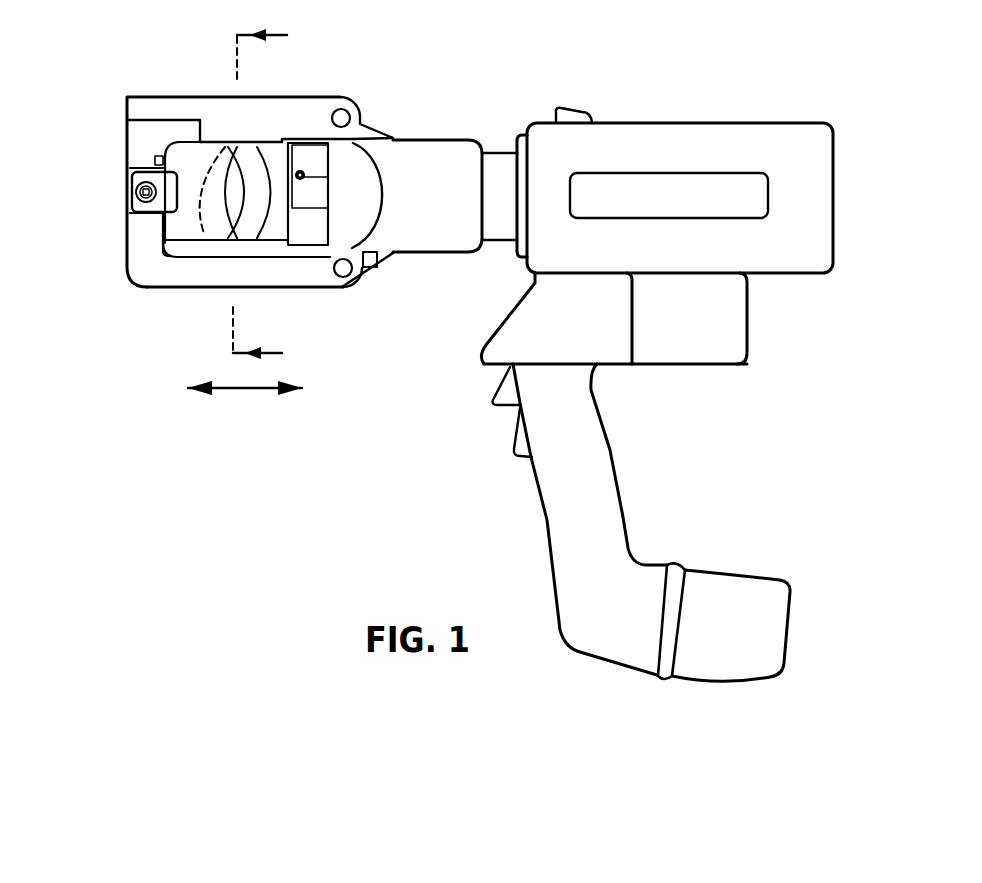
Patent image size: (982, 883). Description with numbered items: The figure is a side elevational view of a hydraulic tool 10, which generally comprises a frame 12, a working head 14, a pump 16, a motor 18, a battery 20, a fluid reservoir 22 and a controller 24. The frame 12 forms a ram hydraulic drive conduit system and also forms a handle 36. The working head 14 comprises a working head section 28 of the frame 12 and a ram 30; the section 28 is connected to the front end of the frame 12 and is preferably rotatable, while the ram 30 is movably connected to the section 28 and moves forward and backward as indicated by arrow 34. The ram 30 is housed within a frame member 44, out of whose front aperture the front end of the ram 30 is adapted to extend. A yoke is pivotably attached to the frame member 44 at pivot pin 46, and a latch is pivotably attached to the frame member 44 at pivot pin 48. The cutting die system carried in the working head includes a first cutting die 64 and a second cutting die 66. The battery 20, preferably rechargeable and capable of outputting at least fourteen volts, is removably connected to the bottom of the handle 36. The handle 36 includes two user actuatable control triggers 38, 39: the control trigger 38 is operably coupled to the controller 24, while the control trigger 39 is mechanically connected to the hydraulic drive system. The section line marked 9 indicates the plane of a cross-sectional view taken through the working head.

The tool 10 is at (158, 58).
The frame 12 is at (610, 431).
The working head 14 is at (142, 286).
The pump 16 is at (540, 180).
The motor 18 is at (770, 196).
The battery 20 is at (787, 635).
The fluid reservoir 22 is at (736, 338).
The controller 24 is at (820, 226).
The working head section 28 is at (177, 281).
The ram 30 is at (348, 187).
The arrow 34 is at (242, 390).
The handle 36 is at (552, 520).
The control trigger 38 is at (513, 442).
The control trigger 39 is at (492, 395).
The frame member 44 is at (402, 254).
The pivot pin 46 is at (350, 281).
The pivot pin 48 is at (350, 109).
The first cutting die 64 is at (173, 142).
The second cutting die 66 is at (268, 152).
The section line 9- 9 is at (245, 197).